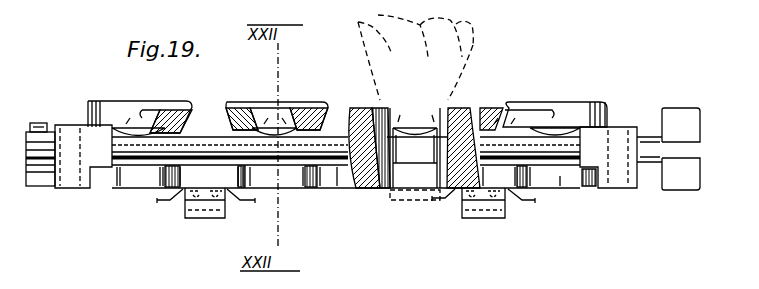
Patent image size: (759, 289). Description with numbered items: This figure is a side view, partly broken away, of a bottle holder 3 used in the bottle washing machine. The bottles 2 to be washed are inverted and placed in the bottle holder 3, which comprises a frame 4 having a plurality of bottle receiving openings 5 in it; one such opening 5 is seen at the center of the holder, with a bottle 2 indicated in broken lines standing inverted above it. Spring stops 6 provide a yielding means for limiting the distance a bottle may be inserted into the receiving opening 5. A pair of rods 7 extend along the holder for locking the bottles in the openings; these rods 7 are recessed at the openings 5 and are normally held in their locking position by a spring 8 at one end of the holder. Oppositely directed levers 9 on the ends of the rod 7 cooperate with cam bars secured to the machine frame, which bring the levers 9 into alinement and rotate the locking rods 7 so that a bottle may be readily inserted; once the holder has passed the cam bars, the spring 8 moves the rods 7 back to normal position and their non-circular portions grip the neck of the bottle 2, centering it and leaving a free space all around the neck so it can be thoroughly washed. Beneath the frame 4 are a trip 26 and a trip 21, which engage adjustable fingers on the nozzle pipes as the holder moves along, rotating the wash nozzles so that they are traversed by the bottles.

The bottle 2 is at (474, 47).
The bottle holder 3 is at (118, 109).
The frame 4 is at (337, 112).
The bottle receiving opening 5 is at (418, 180).
The spring stop 6 is at (346, 209).
The rod 7 is at (342, 150).
The spring 8 is at (52, 178).
The lever 9 is at (696, 166).
The trip 21 is at (496, 212).
The trip 26 is at (207, 212).